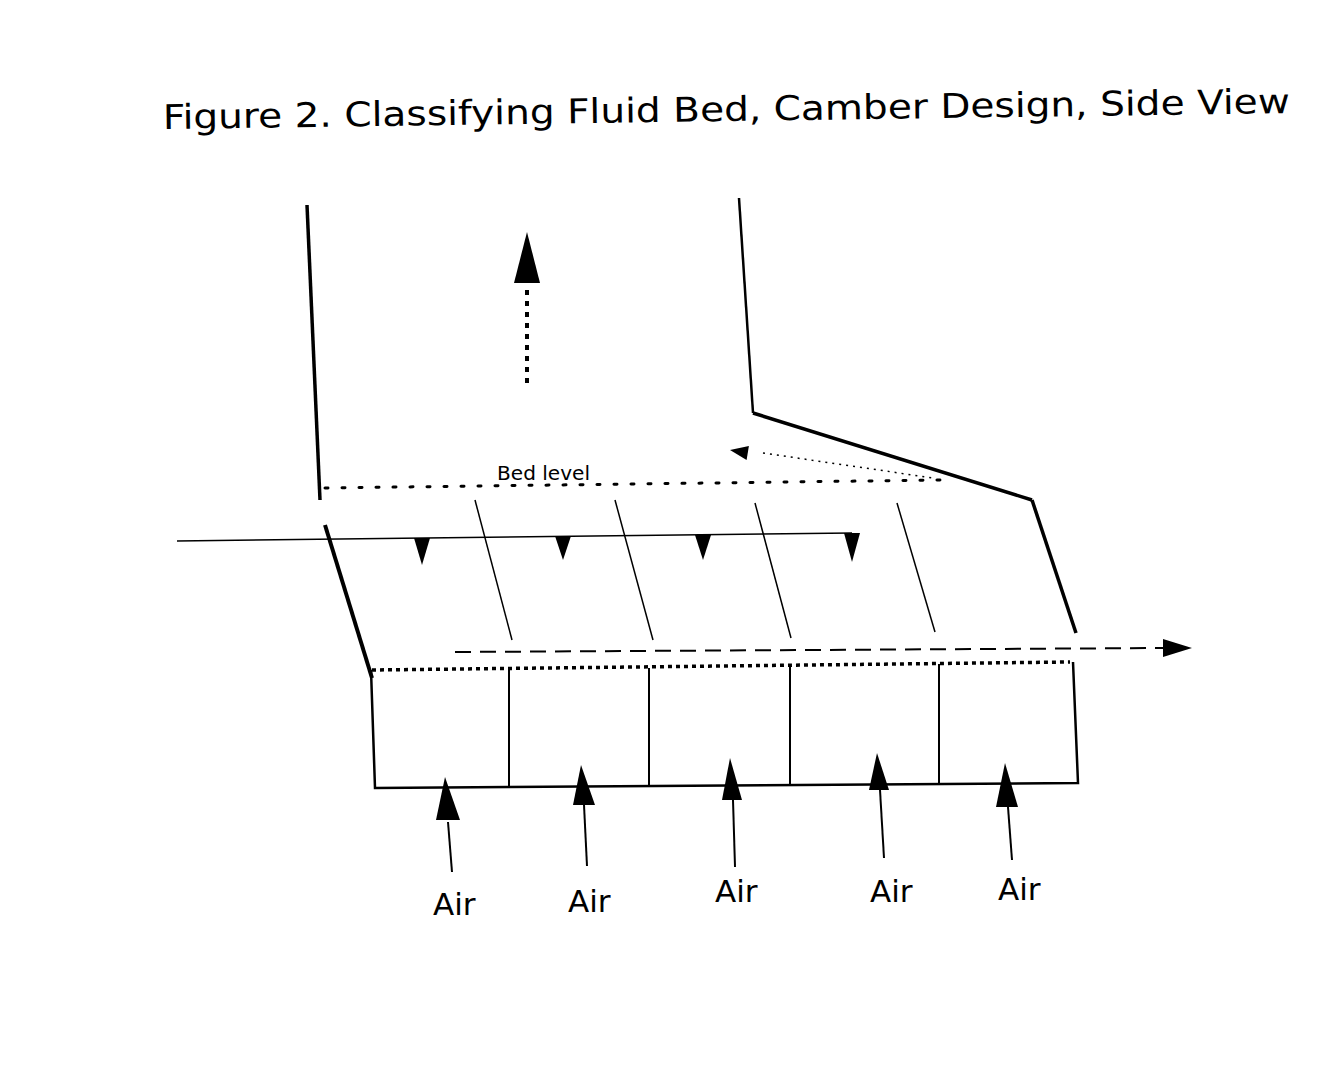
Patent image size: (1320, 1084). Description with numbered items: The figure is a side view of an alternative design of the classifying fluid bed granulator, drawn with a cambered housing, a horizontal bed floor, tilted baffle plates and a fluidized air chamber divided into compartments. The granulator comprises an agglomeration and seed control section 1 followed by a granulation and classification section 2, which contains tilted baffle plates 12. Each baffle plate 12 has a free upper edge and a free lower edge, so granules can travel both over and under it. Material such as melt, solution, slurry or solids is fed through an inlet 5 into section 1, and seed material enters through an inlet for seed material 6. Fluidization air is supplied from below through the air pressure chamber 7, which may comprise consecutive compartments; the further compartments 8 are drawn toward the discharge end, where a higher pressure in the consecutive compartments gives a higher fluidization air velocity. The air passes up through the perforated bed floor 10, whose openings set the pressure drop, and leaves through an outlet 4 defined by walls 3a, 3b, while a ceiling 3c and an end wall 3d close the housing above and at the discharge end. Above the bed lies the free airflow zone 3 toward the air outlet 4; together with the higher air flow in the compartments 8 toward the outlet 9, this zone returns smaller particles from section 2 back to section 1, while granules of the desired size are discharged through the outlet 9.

The agglomeration and seed control section 1 is at (418, 589).
The granulation and classification section 2 is at (711, 570).
The free airflow zone 3 is at (850, 470).
The wall 3a is at (292, 280).
The wall 3b is at (760, 275).
The ceiling 3c is at (836, 415).
The end wall 3d is at (1073, 566).
The outlet for discharging air 4 is at (533, 275).
The inlet 5 is at (483, 542).
The inlet for seed material 6 is at (306, 500).
The air pressure chamber 7 is at (440, 729).
The air plenum 8 is at (793, 724).
The outlet for discharging produced granules 9 is at (859, 650).
The bed floor 10 is at (472, 673).
The baffle plate 12 is at (927, 528).